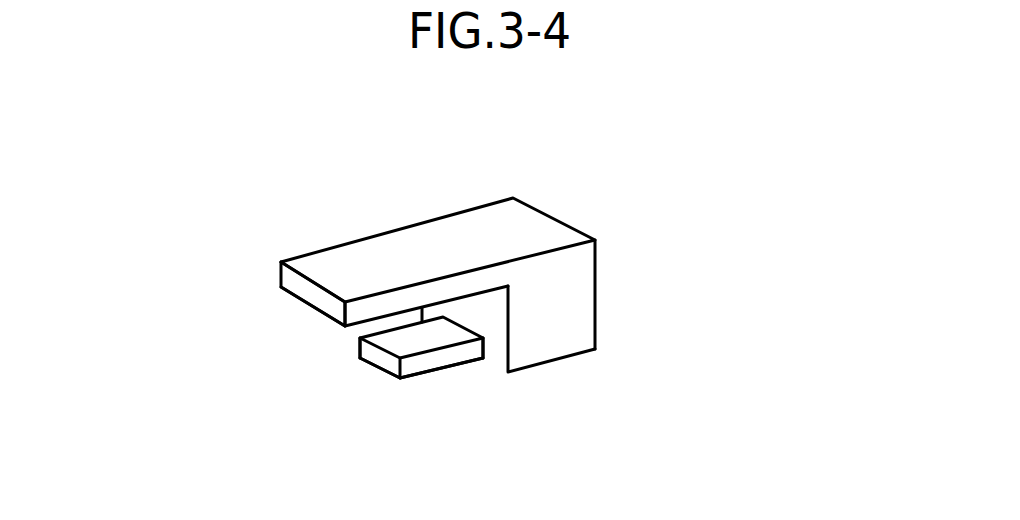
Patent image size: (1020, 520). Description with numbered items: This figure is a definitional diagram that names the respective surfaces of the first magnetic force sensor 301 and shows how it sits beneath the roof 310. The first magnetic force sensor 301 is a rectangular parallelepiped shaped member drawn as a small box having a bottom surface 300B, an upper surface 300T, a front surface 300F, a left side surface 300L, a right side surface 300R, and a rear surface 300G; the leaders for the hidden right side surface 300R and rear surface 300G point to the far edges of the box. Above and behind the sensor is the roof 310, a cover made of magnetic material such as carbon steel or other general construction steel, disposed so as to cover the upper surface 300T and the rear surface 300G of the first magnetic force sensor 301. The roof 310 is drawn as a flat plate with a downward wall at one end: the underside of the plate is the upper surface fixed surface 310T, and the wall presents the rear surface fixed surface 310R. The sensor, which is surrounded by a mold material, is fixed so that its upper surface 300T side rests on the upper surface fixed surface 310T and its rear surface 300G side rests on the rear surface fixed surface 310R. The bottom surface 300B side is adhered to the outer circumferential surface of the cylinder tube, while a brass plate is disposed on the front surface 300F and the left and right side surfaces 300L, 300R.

The roof 310 is at (450, 230).
The upper surface fixed surface 310T is at (362, 326).
The rear surface fixed surface 310R is at (500, 345).
The first magnetic force sensor 301 is at (491, 289).
The upper surface 300T is at (412, 338).
The front surface 300F is at (377, 357).
The left side surface 300L is at (443, 358).
The bottom surface 300B is at (392, 376).
The right side surface 300R is at (376, 329).
The rear surface 300G is at (470, 327).